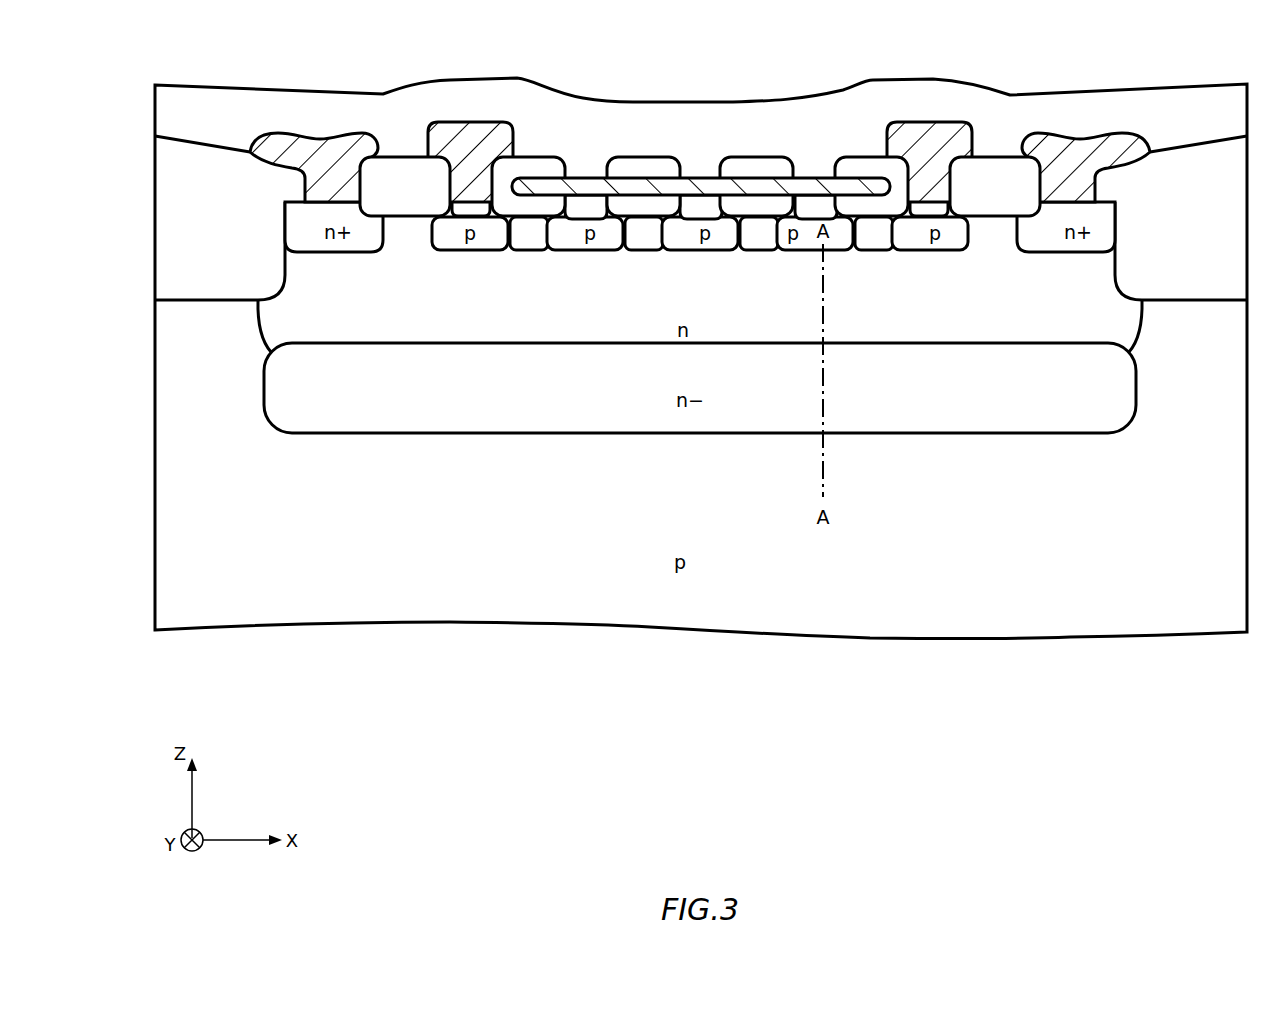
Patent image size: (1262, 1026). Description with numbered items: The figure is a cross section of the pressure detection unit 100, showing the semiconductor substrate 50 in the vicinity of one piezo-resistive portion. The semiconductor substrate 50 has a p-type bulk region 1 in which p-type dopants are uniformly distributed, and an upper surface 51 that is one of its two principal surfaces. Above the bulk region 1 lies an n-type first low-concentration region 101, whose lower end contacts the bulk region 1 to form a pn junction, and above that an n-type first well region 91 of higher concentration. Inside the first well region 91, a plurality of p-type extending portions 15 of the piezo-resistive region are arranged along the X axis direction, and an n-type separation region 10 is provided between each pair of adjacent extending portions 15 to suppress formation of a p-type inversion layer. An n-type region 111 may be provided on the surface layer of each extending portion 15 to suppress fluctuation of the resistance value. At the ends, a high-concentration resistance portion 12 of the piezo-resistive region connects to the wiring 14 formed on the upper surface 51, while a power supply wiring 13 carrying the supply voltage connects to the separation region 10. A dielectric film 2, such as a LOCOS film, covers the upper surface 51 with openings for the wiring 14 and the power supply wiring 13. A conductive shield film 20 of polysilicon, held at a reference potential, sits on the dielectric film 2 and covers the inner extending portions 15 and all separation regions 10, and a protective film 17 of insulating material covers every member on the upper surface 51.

The bulk region 1 is at (235, 603).
The dielectric film 2 is at (175, 170).
The separation region 10 is at (350, 243).
The high-concentration resistance portion 12 is at (460, 207).
The power supply wiring 13 is at (328, 156).
The wiring 14 is at (470, 150).
The extending portion 15 is at (492, 237).
The protective film 17 is at (233, 112).
The shield film 20 is at (580, 186).
The semiconductor substrate 50 is at (557, 648).
The upper surface 51 is at (1117, 204).
The first well region 91 is at (327, 318).
The pressure detection unit 100 is at (750, 748).
The first low-concentration region 101 is at (427, 405).
The n-type region 111 is at (578, 200).